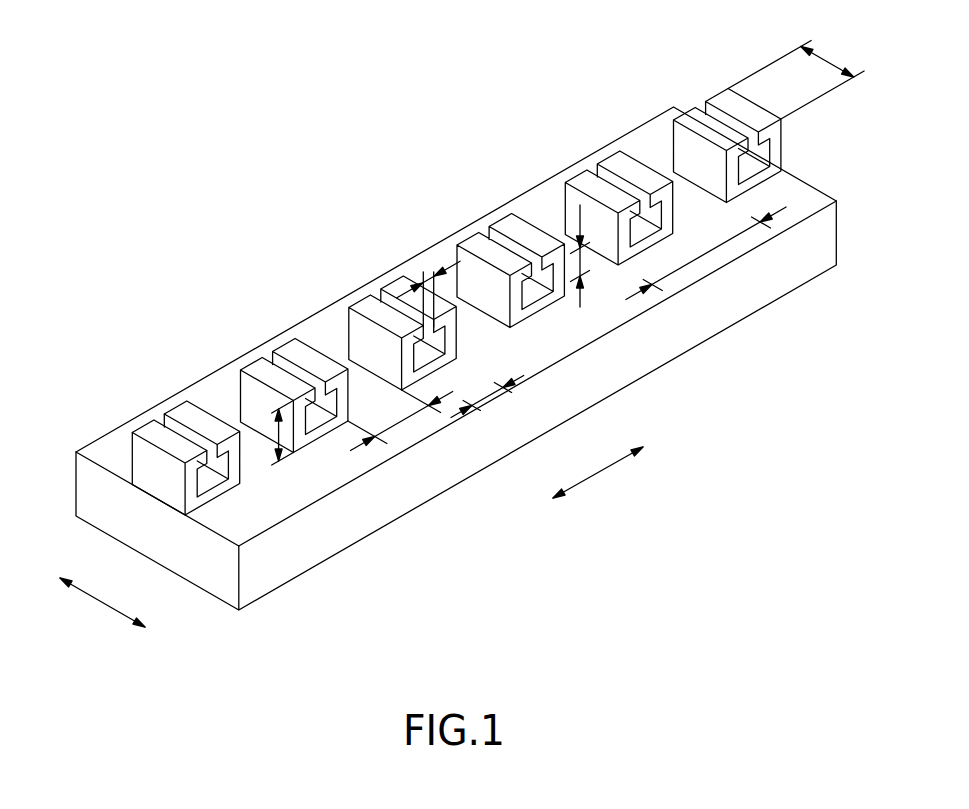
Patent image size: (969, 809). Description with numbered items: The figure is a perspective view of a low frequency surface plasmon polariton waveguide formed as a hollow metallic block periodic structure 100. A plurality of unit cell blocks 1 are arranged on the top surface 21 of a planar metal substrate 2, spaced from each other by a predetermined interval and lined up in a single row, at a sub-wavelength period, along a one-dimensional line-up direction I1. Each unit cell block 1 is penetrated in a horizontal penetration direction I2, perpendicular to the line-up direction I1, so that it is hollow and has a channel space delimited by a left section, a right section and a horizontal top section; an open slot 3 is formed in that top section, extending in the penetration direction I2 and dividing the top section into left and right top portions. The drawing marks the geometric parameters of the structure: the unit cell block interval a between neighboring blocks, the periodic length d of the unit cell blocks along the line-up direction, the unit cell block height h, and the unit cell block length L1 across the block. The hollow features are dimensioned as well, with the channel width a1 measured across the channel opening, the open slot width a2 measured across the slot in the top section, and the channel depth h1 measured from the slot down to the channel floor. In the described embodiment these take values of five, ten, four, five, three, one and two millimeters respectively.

The hollow metallic block periodic structure 100 is at (456, 350).
The unit cell block 1 is at (159, 428).
The planar metal substrate 2 is at (456, 358).
The top surface 21 is at (221, 378).
The open slot 3 is at (154, 409).
The unit cell block interval a is at (405, 421).
The channel width a1 is at (498, 393).
The open slot width a2 is at (433, 270).
The unit cell block height h is at (277, 440).
The channel depth h1 is at (581, 258).
The periodic length of unit cell block d is at (712, 250).
The unit cell block length L1 is at (826, 58).
The one-dimensional line-up direction I1 is at (597, 473).
The horizontal penetration direction I2 is at (100, 601).